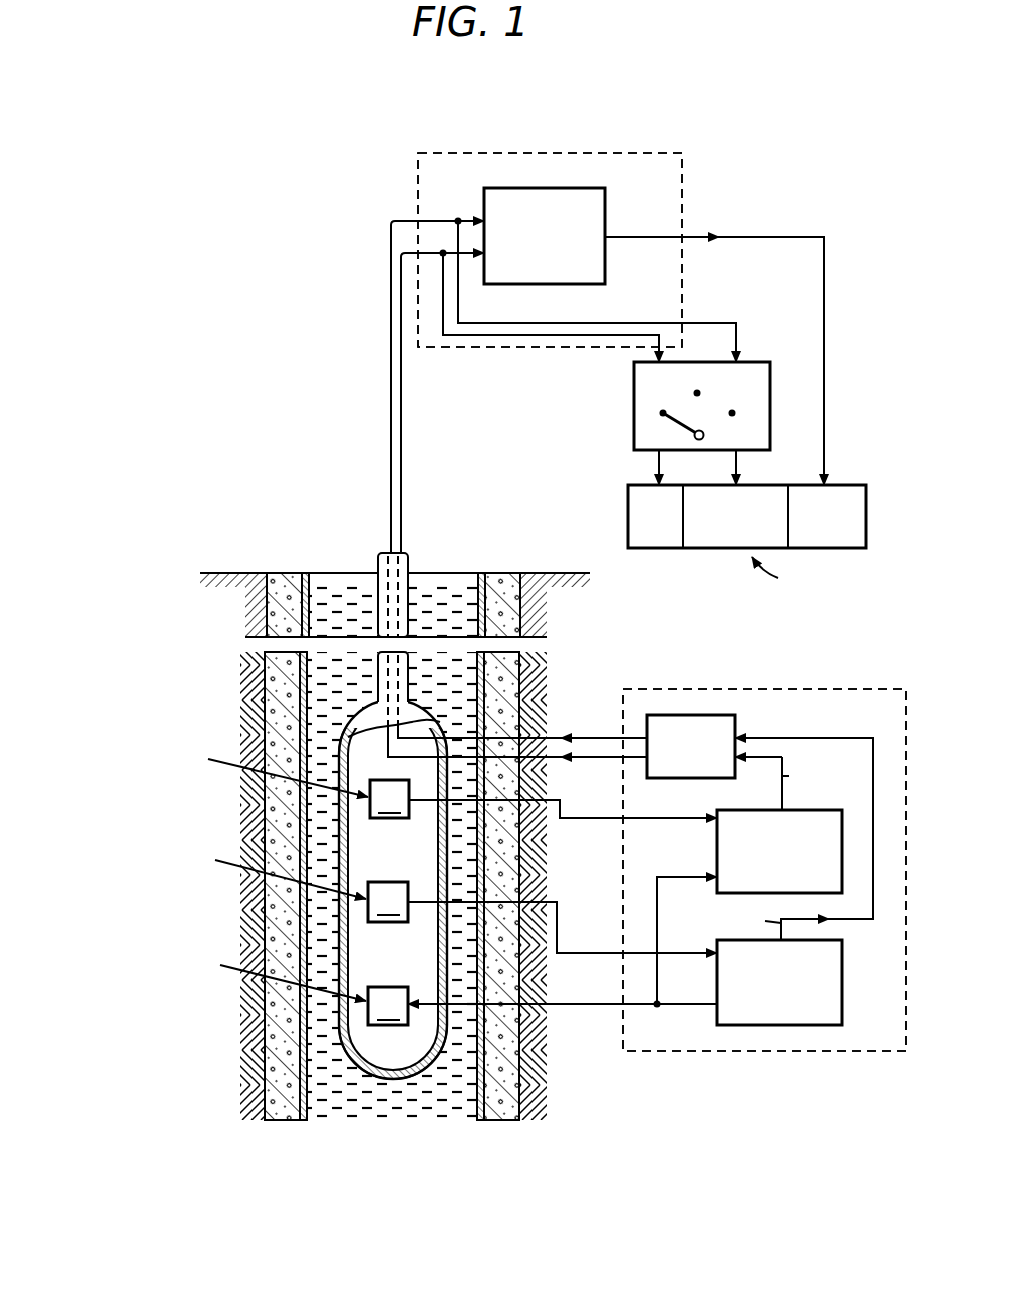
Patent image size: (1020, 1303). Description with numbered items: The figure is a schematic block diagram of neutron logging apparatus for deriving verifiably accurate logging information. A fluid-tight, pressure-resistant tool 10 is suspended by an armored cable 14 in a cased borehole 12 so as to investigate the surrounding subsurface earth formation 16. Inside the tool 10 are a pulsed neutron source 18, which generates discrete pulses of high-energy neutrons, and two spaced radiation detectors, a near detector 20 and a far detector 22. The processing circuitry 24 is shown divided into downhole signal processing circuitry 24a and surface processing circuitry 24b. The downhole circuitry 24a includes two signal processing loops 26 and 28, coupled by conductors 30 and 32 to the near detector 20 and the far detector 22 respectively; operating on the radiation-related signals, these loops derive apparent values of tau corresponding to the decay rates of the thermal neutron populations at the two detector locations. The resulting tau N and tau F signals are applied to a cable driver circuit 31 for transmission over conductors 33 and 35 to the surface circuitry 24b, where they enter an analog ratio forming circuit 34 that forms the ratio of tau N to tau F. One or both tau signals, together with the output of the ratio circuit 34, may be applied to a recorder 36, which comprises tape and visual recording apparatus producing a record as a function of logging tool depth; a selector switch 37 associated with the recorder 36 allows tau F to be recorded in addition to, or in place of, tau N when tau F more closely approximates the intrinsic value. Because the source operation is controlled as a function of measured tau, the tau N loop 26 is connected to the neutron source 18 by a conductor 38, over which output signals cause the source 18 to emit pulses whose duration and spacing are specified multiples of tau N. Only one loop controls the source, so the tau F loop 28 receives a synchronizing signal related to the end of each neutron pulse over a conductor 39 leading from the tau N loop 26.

The tool 10 is at (362, 716).
The cased borehole 12 is at (312, 578).
The armored cable 14 is at (410, 560).
The subsurface earth formation 16 is at (229, 700).
The pulsed neutron source 18 is at (224, 989).
The near detector 20 is at (226, 885).
The far detector 22 is at (227, 783).
The processing circuitry 24 is at (470, 151).
The downhole signal processing circuitry 24a is at (790, 689).
The surface processing circuitry 24b is at (572, 153).
The tau N signal processing loop 26 is at (845, 1009).
The tau F signal processing loop 28 is at (716, 849).
The conductor 30 is at (587, 953).
The cable driver circuit 31 is at (729, 714).
The conductor 32 is at (592, 822).
The conductor 33 is at (403, 456).
The analog ratio forming circuit 34 is at (607, 266).
The conductor 35 is at (390, 405).
The recorder 36 is at (628, 505).
The selector switch 37 is at (630, 393).
The conductor 38 is at (584, 1008).
The conductor 39 is at (661, 922).